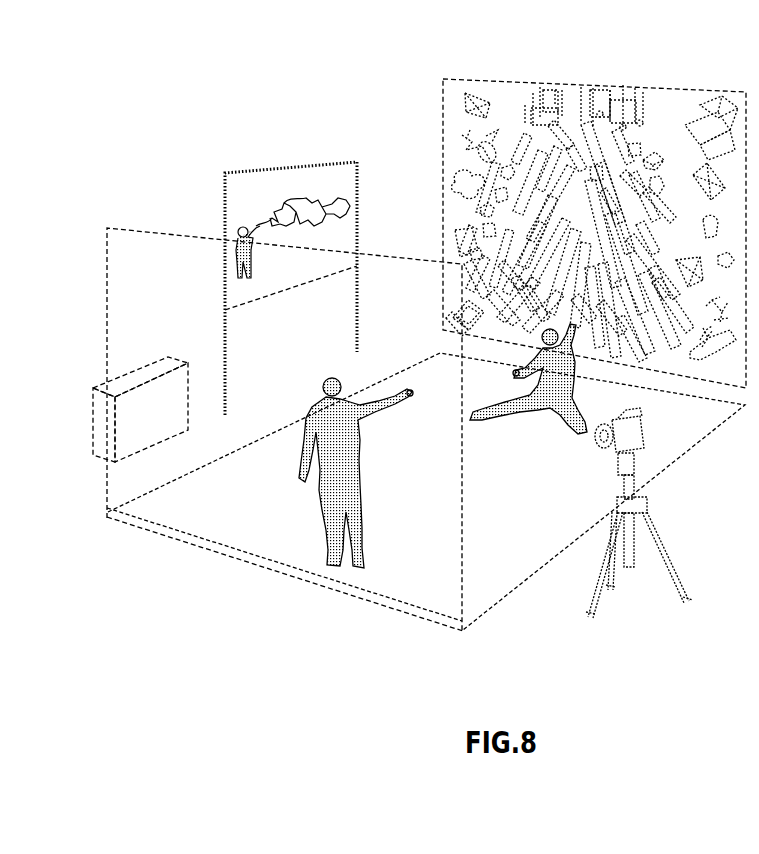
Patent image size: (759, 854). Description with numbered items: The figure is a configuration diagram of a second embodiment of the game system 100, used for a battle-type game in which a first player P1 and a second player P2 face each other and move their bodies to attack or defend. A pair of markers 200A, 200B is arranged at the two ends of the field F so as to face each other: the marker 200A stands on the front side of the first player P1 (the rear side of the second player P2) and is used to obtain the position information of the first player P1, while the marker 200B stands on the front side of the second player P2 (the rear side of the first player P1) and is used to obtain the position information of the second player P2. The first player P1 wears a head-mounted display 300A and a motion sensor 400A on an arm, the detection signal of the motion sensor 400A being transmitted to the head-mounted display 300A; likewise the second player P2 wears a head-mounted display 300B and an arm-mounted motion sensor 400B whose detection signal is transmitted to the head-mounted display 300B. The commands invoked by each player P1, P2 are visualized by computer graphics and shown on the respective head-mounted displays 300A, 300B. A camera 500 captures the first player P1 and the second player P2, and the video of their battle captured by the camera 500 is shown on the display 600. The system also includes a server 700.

The game system 100 is at (344, 70).
The marker 200A is at (672, 89).
The marker 200B is at (147, 231).
The head-mounted display 300A is at (341, 384).
The head-mounted display 300B is at (541, 332).
The motion sensor 400A is at (407, 400).
The motion sensor 400B is at (516, 379).
The camera 500 is at (643, 433).
The display 600 is at (272, 168).
The server 700 is at (150, 377).
The first player P1 is at (235, 258).
The second player P2 is at (356, 205).
The field F is at (407, 616).